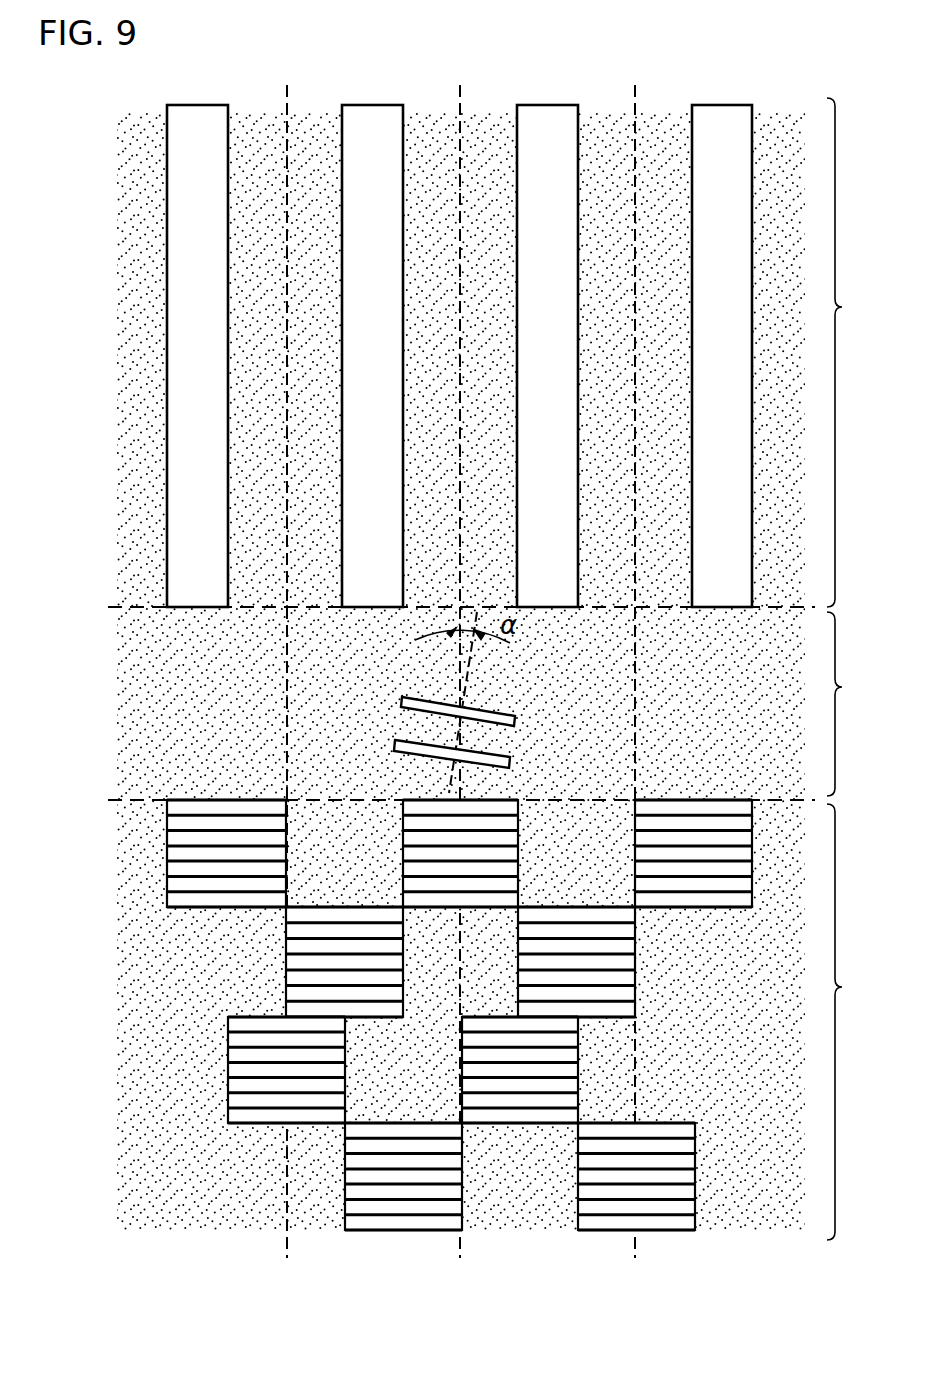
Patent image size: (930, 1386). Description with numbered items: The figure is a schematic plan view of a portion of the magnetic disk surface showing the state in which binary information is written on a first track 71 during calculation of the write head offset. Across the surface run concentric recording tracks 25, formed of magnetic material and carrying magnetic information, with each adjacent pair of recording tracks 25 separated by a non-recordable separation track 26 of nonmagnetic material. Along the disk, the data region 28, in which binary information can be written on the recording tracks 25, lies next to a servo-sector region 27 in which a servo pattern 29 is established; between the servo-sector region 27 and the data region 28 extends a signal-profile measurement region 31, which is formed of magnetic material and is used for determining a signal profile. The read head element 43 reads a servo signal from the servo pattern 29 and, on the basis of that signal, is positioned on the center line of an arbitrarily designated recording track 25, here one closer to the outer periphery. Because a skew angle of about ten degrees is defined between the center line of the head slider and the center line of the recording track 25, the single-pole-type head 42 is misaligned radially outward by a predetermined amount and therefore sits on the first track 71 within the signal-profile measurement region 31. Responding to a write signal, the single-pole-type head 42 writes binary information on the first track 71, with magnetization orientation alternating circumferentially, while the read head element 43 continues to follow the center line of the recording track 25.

The recording track 25 is at (308, 118).
The separation track 26 is at (198, 112).
The servo-sector region 27 is at (495, 1020).
The data region 28 is at (491, 352).
The servo pattern 29 is at (167, 900).
The signal-profile measurement region 31 is at (491, 703).
The single-pole-type head 42 is at (395, 744).
The read head element 43 is at (401, 701).
The first track 71 is at (451, 670).